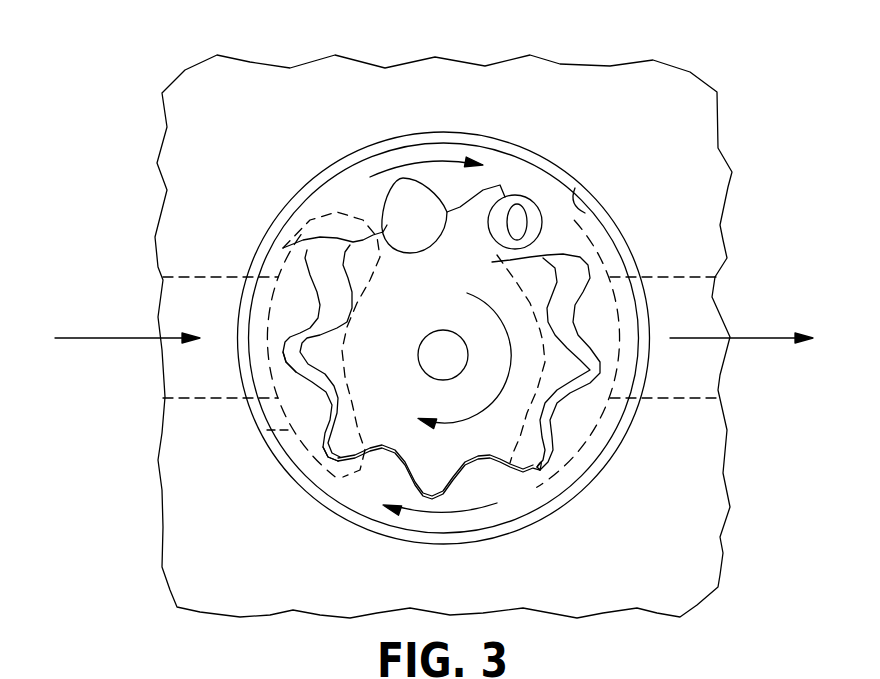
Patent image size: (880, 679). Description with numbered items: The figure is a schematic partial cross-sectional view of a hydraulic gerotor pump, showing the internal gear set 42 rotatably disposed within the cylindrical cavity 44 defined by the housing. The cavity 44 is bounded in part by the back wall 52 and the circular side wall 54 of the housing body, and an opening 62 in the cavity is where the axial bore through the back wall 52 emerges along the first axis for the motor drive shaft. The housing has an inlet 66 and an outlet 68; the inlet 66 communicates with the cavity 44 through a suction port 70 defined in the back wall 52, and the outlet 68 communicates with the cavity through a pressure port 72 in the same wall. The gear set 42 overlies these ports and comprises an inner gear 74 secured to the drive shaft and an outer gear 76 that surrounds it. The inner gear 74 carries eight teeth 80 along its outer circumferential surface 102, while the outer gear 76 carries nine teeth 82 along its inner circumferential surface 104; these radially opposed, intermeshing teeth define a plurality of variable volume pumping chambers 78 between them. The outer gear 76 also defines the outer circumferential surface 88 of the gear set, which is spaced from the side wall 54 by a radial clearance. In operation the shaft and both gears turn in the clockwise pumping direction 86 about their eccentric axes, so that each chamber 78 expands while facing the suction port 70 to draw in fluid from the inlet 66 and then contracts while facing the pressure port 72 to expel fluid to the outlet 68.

The internal gear set 42 is at (320, 168).
The cylindrical cavity 44 is at (515, 146).
The back wall 52 is at (393, 232).
The circular side wall 54 is at (587, 213).
The opening 62 is at (443, 330).
The inlet 66 is at (202, 273).
The outlet 68 is at (677, 402).
The suction port 70 is at (262, 437).
The pressure port 72 is at (585, 440).
The inner gear 74 is at (330, 480).
The outer gear 76 is at (340, 379).
The pumping chambers 78 is at (323, 248).
The teeth of inner gear 80 is at (283, 348).
The teeth of outer gear 82 is at (507, 213).
The clockwise pumping direction 86 is at (440, 513).
The outer circumferential surface 88 is at (447, 143).
The outer circumferential surface of inner gear 102 is at (307, 483).
The inner circumferential surface of outer gear 104 is at (535, 470).